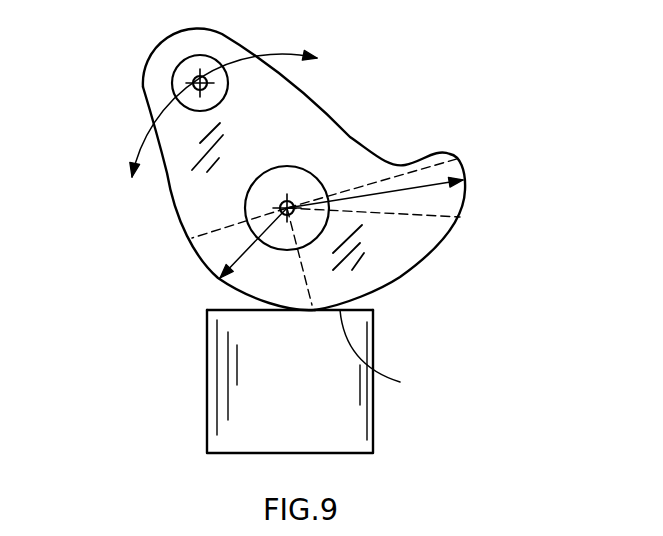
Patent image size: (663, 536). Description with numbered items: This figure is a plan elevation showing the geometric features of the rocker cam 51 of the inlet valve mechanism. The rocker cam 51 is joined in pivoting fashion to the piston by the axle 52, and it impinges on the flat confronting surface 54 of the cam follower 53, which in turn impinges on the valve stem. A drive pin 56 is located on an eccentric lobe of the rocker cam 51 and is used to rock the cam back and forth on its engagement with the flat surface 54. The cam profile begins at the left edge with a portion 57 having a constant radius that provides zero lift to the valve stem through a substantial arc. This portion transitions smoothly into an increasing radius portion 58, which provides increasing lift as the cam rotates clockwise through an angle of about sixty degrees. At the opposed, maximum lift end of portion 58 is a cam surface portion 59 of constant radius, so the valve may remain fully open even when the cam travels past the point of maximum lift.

The rocker cam 51 is at (323, 110).
The axle 52 is at (287, 208).
The cam follower 53 is at (373, 350).
The flat confronting surface 54 is at (362, 304).
The drive pin 56 is at (193, 82).
The constant radius portion 57 is at (203, 268).
The increasing radius portion 58 is at (389, 355).
The cam surface portion 59 is at (465, 192).